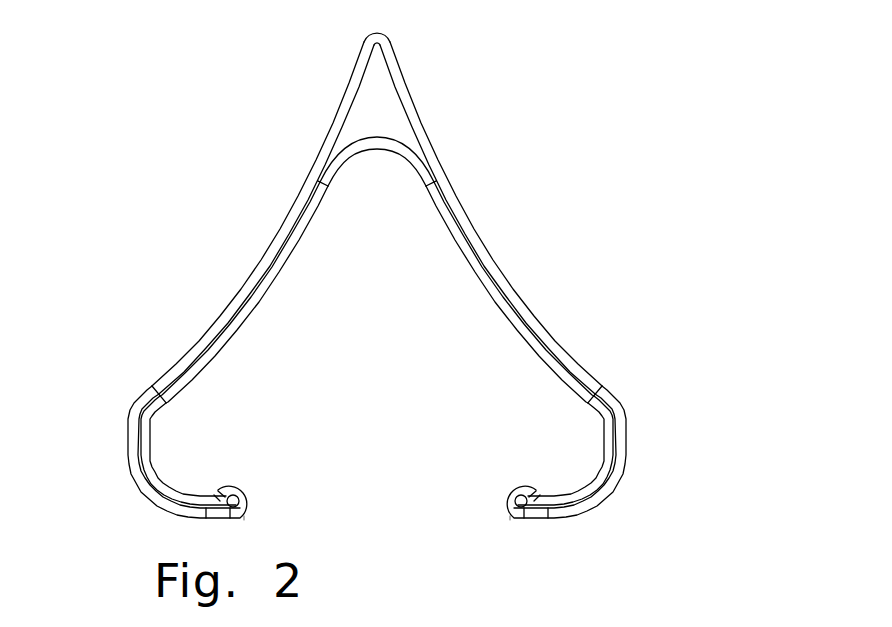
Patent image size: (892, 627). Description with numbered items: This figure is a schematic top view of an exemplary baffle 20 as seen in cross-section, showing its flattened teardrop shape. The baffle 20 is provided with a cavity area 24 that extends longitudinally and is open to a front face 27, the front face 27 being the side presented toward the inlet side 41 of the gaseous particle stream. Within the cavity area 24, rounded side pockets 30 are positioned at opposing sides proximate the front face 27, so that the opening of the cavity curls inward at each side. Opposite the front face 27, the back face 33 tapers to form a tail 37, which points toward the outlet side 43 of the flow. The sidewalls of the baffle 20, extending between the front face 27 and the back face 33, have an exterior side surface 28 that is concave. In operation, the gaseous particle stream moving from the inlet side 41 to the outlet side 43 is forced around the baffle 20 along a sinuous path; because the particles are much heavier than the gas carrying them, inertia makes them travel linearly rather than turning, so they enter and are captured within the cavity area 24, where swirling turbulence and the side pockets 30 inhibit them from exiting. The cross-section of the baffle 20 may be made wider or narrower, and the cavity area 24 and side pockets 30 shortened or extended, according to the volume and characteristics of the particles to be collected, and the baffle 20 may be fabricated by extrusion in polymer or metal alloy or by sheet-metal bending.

The baffle 20 is at (376, 286).
The cavity area 24 is at (340, 365).
The exterior side surface 28 is at (280, 226).
The rounded side pockets 30 is at (185, 454).
The back face 33 is at (372, 33).
The tail 37 is at (462, 25).
The outlet side 43 is at (375, 16).
The inlet side 41 is at (400, 542).
The front face 27 is at (378, 523).